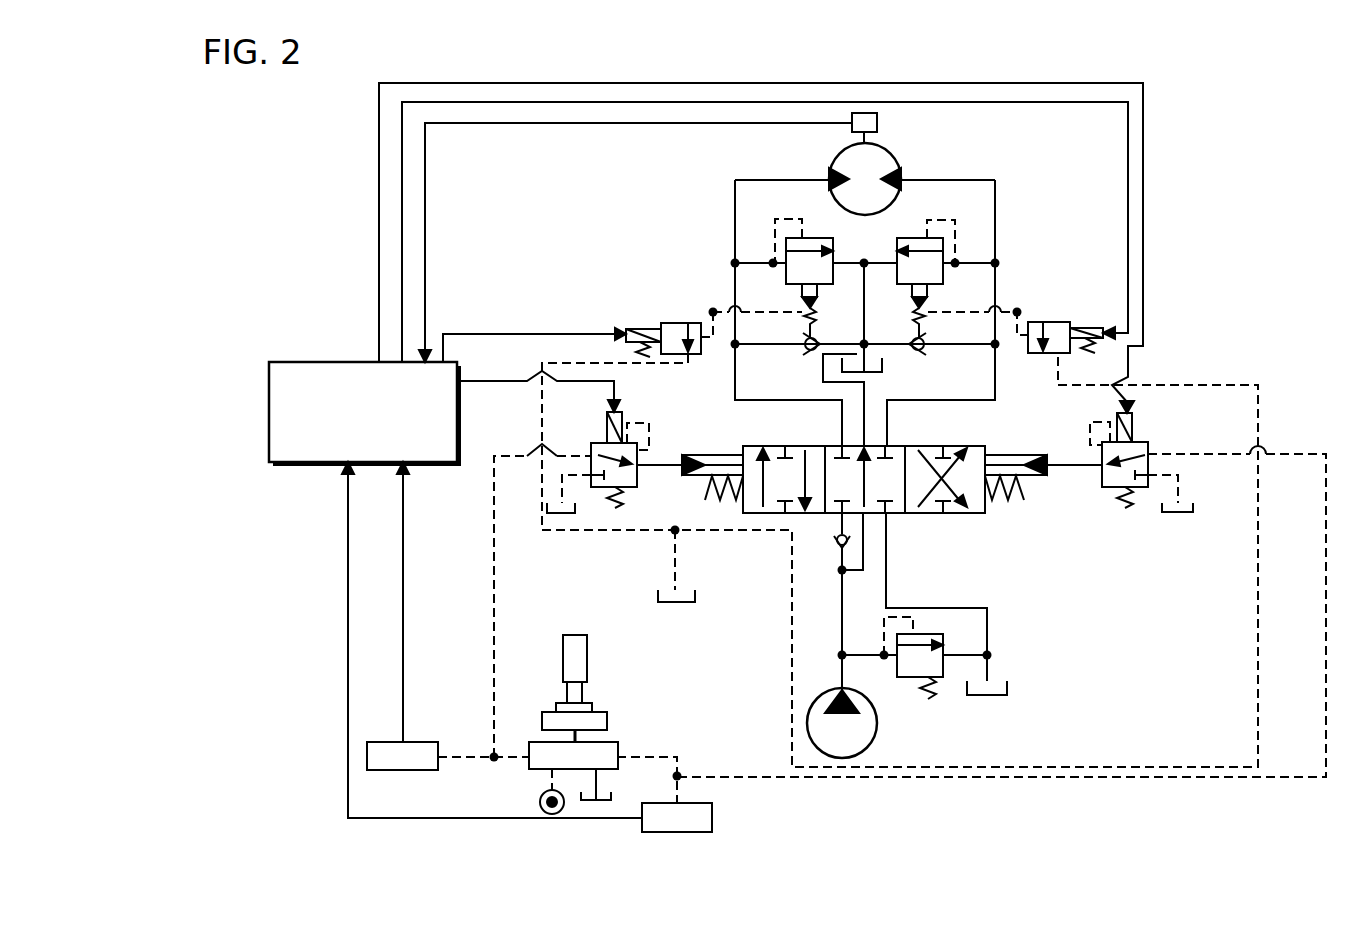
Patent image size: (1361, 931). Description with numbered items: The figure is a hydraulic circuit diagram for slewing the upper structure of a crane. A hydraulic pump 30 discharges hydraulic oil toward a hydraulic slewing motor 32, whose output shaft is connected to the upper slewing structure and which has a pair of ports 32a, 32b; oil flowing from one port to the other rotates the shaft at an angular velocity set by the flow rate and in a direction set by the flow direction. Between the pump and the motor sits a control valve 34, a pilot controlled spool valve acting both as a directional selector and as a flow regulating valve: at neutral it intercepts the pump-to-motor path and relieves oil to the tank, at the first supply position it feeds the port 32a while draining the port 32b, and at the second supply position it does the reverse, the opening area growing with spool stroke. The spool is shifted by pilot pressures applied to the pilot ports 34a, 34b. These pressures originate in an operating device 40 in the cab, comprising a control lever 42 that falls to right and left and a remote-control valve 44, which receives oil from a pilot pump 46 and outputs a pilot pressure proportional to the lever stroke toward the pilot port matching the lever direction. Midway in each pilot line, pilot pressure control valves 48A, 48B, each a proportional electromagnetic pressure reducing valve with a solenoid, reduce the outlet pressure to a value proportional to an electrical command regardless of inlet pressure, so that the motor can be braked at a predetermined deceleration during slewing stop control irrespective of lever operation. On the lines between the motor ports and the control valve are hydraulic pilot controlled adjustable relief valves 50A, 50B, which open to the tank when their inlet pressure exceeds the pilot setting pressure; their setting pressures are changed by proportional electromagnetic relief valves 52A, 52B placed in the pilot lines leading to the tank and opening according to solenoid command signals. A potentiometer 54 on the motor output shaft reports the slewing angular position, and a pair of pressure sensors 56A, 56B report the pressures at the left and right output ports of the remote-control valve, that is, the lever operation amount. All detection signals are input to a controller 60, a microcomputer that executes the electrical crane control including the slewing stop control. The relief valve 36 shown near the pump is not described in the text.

The hydraulic pump 30 is at (868, 726).
The hydraulic slewing motor 32 is at (894, 168).
The port 32a is at (828, 170).
The port 32b is at (900, 170).
The control valve 34 is at (886, 487).
The pilot port 34a is at (697, 455).
The pilot port 34b is at (1040, 455).
The relief valve 36 is at (935, 634).
The operating device 40 is at (585, 748).
The control lever 42 is at (588, 640).
The remote-control valve 44 is at (535, 770).
The pilot pump 46 is at (555, 815).
The pilot pressure control valve 48A is at (600, 443).
The pilot pressure control valve 48B is at (1140, 442).
The adjustable relief valve 50A is at (758, 246).
The adjustable relief valve 50B is at (980, 243).
The proportional electromagnetic relief valve 52A is at (682, 323).
The proportional electromagnetic relief valve 52B is at (1053, 322).
The potentiometer 54 is at (862, 113).
The pressure sensor 56A is at (420, 742).
The pressure sensor 56B is at (675, 832).
The controller 60 is at (330, 362).